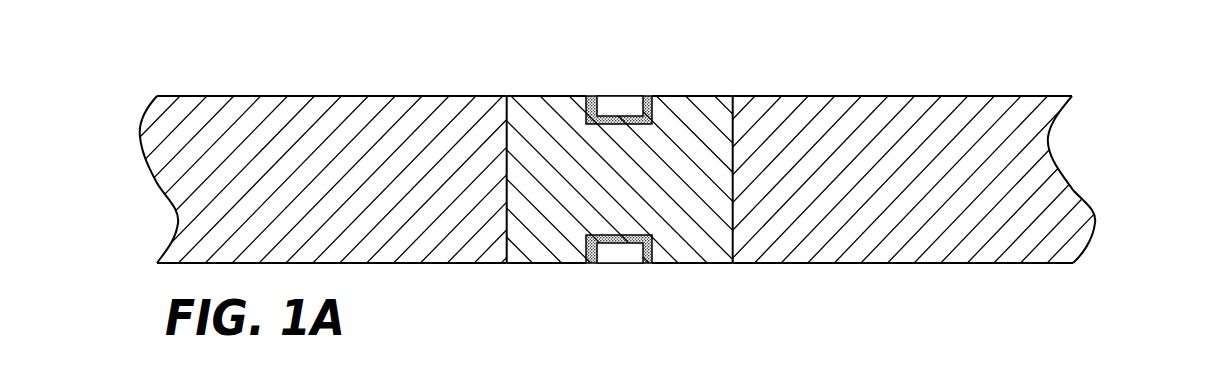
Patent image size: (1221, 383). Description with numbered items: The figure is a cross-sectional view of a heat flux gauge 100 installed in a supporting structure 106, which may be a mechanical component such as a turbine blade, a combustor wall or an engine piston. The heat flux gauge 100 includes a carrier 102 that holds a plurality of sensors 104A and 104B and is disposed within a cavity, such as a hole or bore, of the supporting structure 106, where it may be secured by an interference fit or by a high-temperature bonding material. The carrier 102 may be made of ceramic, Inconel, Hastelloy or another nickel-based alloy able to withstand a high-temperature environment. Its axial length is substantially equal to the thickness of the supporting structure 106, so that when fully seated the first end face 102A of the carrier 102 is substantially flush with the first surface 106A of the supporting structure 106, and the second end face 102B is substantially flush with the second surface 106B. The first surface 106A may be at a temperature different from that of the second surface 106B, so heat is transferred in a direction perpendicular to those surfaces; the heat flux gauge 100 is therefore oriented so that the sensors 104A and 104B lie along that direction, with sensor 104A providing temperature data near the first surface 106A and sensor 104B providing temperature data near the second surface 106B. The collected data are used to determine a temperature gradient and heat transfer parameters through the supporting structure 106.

The heat flux gauge 100 is at (610, 173).
The carrier 102 is at (608, 178).
The first end face 102A is at (520, 97).
The second end face 102B is at (533, 263).
The sensor 104A is at (606, 104).
The sensor 104B is at (618, 258).
The supporting structure 106 is at (610, 180).
The first surface 106A is at (925, 97).
The second surface 106B is at (950, 263).